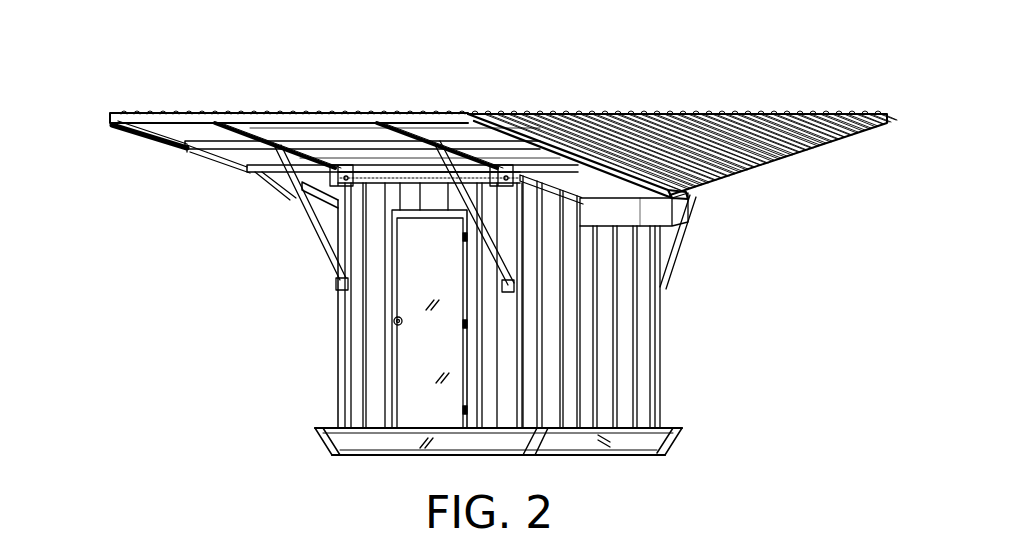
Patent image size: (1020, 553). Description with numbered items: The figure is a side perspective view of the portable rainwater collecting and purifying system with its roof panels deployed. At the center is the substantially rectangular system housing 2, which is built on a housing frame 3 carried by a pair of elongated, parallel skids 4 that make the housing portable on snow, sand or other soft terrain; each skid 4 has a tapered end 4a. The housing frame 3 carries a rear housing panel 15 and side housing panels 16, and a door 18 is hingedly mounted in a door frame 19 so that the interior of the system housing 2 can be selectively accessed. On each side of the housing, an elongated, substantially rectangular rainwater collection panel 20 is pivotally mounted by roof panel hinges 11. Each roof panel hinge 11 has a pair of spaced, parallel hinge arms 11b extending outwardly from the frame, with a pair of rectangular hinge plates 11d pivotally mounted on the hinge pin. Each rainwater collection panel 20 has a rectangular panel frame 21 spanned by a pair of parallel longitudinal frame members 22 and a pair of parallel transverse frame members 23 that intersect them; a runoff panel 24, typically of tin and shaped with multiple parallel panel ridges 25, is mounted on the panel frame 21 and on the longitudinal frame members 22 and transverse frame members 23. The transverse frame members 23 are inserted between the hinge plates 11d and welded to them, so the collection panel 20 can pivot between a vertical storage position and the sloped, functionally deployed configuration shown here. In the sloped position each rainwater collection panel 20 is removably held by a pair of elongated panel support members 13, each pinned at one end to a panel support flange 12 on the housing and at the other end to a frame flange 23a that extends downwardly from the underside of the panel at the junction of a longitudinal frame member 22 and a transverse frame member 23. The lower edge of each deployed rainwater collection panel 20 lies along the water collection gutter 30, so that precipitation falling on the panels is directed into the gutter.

The system housing 2 is at (340, 350).
The housing frame 3 is at (676, 442).
The skids 4 is at (580, 438).
The tapered end 4a is at (323, 440).
The roof panel hinge 11 is at (283, 150).
The hinge arms 11b is at (345, 178).
The hinge plates 11d is at (343, 165).
The panel support flange 12 is at (507, 290).
The panel support members 13 is at (311, 247).
The rear housing panel 15 is at (623, 360).
The side housing panels 16 is at (355, 388).
The door 18 is at (440, 263).
The door frame 19 is at (468, 363).
The rainwater collection panel 20 is at (112, 117).
The panel frame 21 is at (184, 162).
The longitudinal frame members 22 is at (241, 166).
The transverse frame members 23 is at (397, 128).
The frame flange 23a is at (400, 130).
The runoff panel 24 is at (185, 112).
The panel ridges 25 is at (137, 112).
The water collection gutter 30 is at (680, 218).